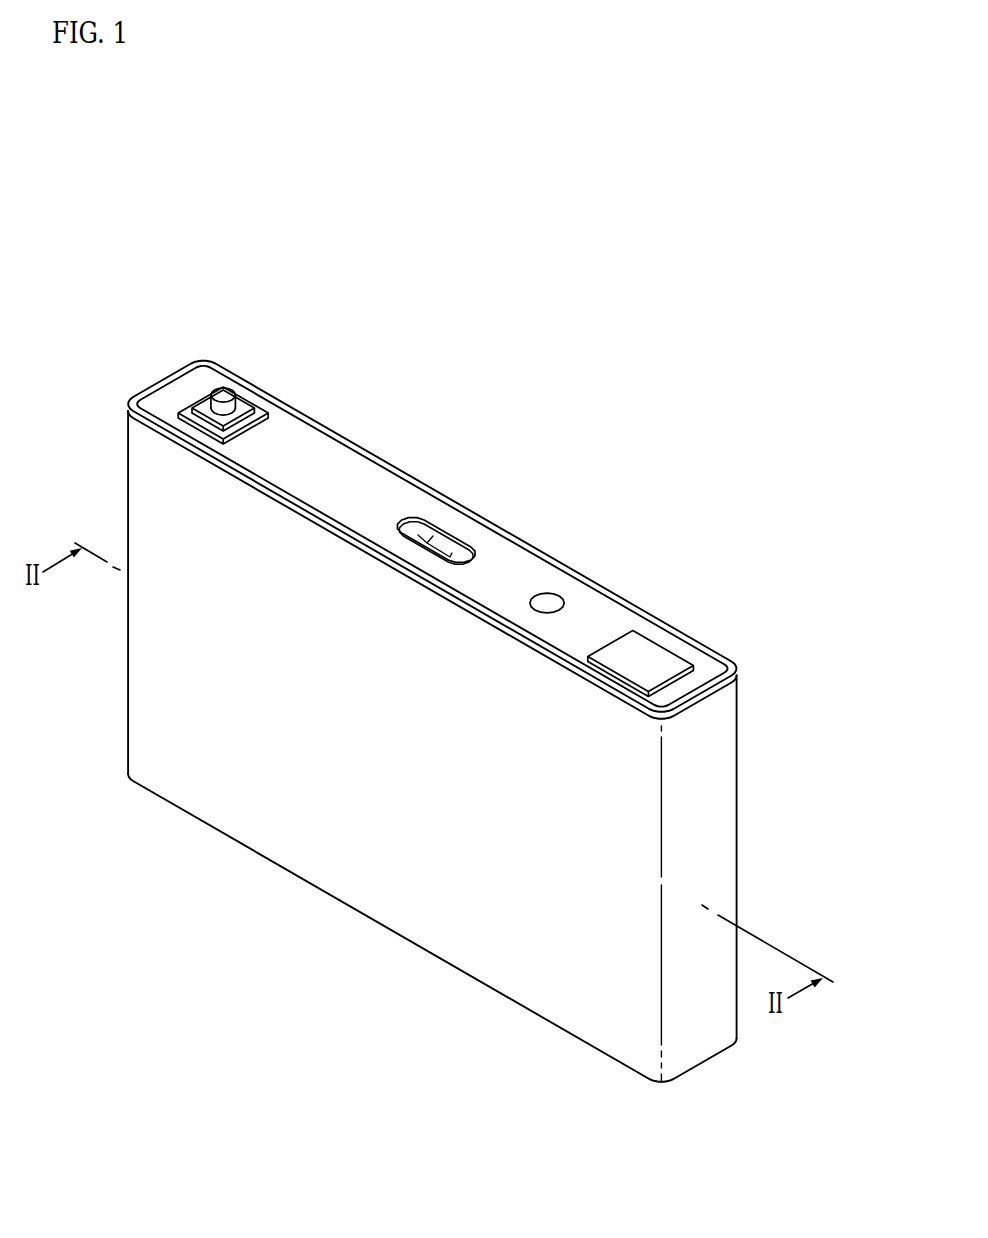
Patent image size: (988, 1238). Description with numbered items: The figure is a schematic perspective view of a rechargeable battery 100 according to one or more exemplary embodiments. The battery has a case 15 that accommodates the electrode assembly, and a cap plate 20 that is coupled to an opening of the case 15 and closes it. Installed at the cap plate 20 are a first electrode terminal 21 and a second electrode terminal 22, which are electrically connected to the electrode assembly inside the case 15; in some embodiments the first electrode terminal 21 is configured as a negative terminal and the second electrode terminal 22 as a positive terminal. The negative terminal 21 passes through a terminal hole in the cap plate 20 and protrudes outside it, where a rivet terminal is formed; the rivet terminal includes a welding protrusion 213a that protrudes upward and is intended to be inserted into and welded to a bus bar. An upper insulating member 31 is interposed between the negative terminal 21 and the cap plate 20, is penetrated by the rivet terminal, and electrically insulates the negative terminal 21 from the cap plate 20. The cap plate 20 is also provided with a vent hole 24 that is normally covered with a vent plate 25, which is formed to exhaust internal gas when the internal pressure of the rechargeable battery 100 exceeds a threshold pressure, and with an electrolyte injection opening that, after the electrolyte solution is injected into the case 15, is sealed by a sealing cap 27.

The rechargeable battery 100 is at (526, 371).
The case 15 is at (722, 807).
The cap plate 20 is at (310, 465).
The first electrode terminal 21 is at (250, 380).
The welding protrusion 213a is at (221, 388).
The upper insulating member 31 is at (254, 412).
The second electrode terminal 22 is at (662, 628).
The vent hole 24 is at (418, 519).
The vent plate 25 is at (441, 539).
The sealing cap 27 is at (552, 597).